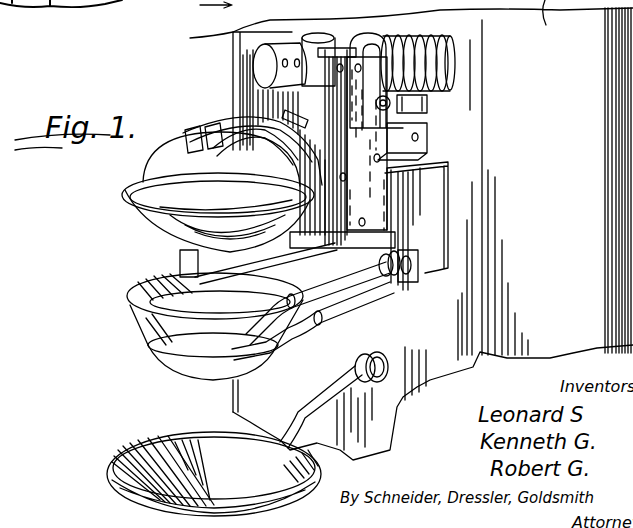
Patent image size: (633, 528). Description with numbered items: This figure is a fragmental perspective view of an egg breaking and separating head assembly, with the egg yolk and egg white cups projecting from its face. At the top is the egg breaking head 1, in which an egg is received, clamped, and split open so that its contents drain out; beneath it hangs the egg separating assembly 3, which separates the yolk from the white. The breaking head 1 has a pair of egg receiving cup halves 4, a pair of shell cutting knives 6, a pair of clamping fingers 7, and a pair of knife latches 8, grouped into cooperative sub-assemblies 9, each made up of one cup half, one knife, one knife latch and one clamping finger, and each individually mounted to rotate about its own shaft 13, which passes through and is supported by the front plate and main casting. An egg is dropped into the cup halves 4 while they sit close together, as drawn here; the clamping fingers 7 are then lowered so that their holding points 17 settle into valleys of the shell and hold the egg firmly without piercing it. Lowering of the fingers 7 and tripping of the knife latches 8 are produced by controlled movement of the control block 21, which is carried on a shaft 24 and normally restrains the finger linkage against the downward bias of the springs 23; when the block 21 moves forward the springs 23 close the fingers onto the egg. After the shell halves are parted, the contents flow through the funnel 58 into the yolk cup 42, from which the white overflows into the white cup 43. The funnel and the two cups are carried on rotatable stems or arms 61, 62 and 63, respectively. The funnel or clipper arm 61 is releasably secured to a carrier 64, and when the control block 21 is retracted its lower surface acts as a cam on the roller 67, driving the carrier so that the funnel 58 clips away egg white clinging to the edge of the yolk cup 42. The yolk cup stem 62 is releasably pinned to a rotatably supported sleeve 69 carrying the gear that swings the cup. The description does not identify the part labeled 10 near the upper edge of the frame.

The egg breaking head 1 is at (179, 112).
The egg separating assembly 3 is at (110, 307).
The egg receiving cup halves 4 is at (125, 208).
The shell cutting knives 6 is at (180, 262).
The clamping fingers 7 is at (215, 118).
The knife latches 8 is at (305, 122).
The cooperative sub-assemblies 9 is at (384, 197).
The machine frame 10 is at (207, 13).
The individually mounted shaft 13 is at (268, 46).
The holding points 17 is at (205, 145).
The control block 21 is at (312, 36).
The springs 23 is at (446, 58).
The shaft 24 is at (432, 102).
The yolk cup 42 is at (180, 366).
The white cup 43 is at (195, 440).
The funnel 58 is at (145, 320).
The funnel or clipper arm 61 is at (324, 286).
The yolk cup stem 62 is at (320, 317).
The white cup stem 63 is at (327, 410).
The carrier 64 is at (412, 283).
The roller 67 is at (433, 120).
The sleeve 69 is at (362, 354).